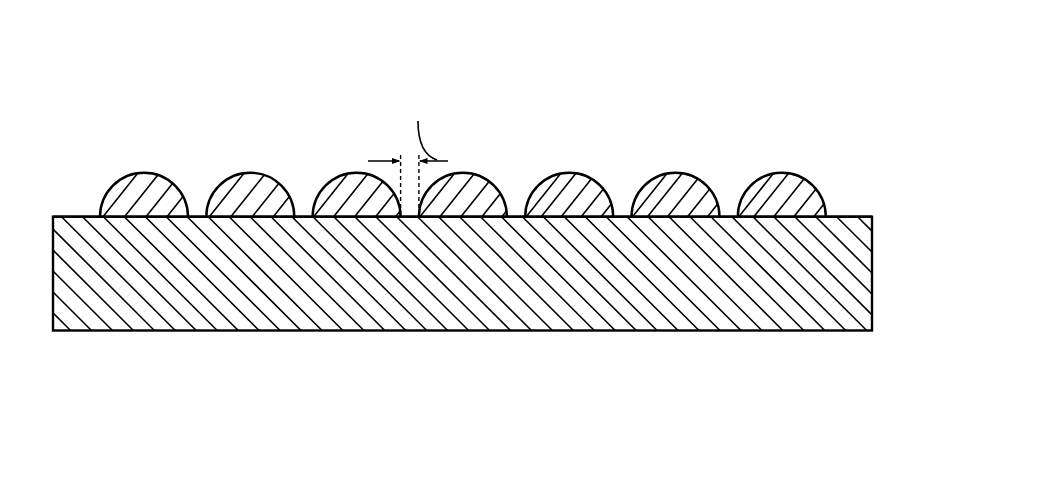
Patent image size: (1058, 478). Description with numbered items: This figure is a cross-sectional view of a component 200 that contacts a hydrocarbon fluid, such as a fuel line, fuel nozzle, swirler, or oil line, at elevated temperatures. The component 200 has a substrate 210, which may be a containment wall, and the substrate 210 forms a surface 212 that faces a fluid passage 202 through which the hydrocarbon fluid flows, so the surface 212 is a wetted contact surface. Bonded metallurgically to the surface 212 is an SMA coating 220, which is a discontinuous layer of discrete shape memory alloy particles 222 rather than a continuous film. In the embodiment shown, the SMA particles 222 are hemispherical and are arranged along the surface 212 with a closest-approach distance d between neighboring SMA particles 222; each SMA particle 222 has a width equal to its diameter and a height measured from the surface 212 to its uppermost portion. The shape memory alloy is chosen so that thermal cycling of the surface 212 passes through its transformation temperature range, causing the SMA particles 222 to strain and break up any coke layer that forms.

The component 200 is at (124, 67).
The fluid passage 202 is at (725, 68).
The substrate 210 is at (862, 279).
The surface 212 is at (89, 210).
The SMA coating 220 is at (531, 152).
The SMA particles 222 is at (788, 188).